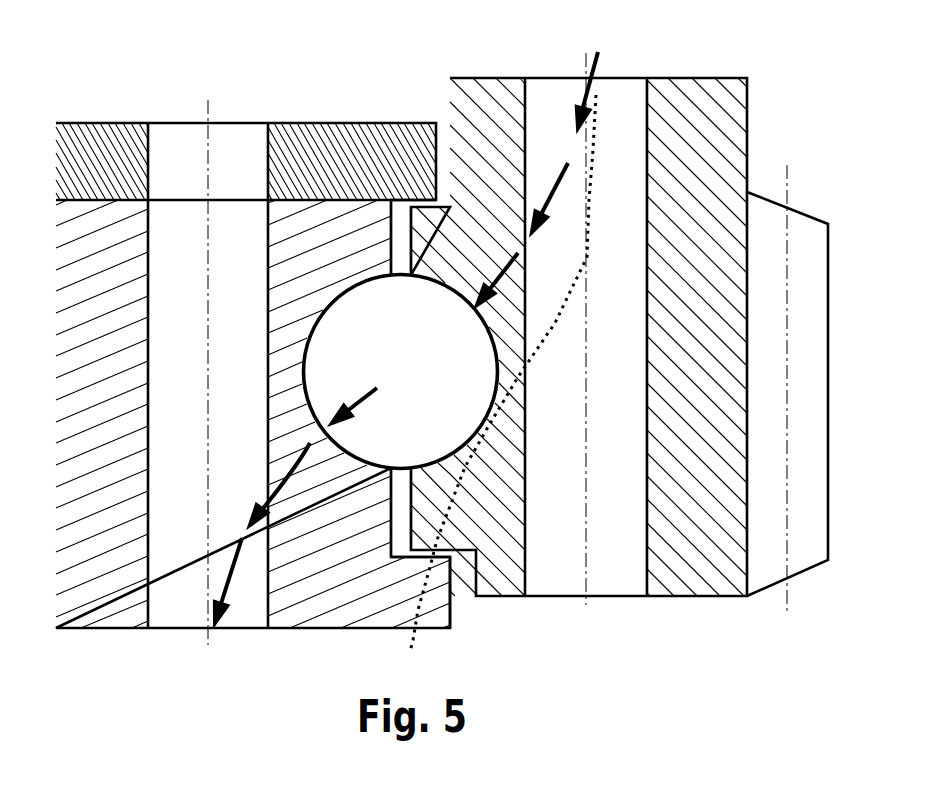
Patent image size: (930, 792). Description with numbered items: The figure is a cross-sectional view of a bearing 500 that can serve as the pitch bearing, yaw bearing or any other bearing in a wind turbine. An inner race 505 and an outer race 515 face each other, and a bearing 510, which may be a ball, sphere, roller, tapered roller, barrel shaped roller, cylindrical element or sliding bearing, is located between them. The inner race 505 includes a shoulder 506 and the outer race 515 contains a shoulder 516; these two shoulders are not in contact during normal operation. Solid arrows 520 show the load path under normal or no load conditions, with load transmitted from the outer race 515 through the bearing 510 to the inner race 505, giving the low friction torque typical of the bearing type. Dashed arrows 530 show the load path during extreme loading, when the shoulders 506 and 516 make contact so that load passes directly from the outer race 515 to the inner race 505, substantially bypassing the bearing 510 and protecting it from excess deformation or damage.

The bearing 500 is at (442, 351).
The inner race 505 is at (98, 578).
The shoulder 506 is at (397, 558).
The bearing 510 is at (375, 333).
The outer race 515 is at (690, 110).
The shoulder 516 is at (412, 227).
The solid arrows 520 is at (214, 618).
The dashed arrows 530 is at (410, 652).